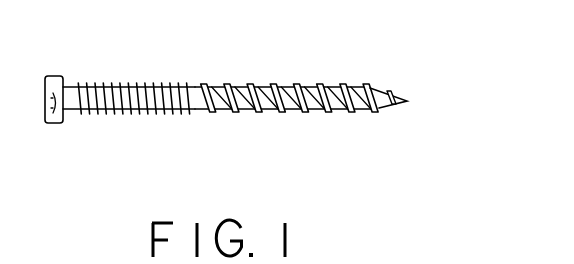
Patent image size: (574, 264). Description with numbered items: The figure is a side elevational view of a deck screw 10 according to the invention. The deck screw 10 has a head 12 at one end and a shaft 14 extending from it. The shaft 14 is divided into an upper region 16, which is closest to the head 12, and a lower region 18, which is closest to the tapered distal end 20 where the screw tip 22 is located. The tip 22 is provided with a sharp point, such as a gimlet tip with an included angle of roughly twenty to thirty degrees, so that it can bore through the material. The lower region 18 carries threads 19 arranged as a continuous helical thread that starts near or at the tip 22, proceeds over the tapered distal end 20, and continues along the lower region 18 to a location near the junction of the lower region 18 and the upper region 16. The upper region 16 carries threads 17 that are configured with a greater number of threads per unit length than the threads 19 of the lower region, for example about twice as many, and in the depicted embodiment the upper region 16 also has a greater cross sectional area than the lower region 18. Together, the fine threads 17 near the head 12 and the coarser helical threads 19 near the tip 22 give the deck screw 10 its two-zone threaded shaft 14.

The deck screw 10 is at (273, 67).
The head 12 is at (52, 124).
The shaft 14 is at (223, 118).
The upper region 16 is at (100, 73).
The threads of the upper region 17 is at (157, 82).
The lower region 18 is at (369, 72).
The threads 19 is at (305, 113).
The tapered distal end 20 is at (401, 82).
The screw tip 22 is at (407, 101).